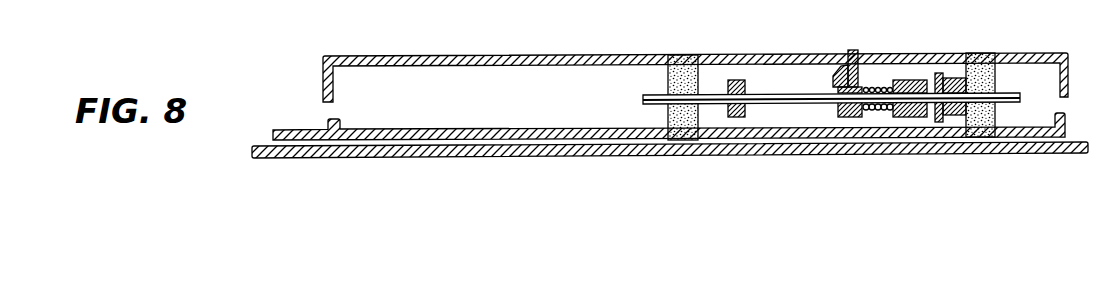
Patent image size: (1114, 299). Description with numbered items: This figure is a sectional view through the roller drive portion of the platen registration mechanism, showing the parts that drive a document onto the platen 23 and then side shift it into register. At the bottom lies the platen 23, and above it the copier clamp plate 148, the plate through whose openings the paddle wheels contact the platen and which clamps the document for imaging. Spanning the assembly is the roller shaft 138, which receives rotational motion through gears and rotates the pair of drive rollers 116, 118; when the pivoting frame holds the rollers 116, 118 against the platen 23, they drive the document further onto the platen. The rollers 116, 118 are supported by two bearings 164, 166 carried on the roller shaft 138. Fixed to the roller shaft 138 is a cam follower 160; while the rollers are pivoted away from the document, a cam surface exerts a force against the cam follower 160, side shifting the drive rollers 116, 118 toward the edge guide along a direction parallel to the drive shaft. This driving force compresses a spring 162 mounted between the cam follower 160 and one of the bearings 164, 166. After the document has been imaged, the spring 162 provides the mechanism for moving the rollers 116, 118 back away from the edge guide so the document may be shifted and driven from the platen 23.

The platen 23 is at (565, 158).
The drive roller 116 is at (985, 52).
The drive roller 118 is at (684, 54).
The roller shaft 138 is at (772, 95).
The copier clamp plate 148 is at (406, 128).
The cam follower 160 is at (850, 50).
The spring 162 is at (882, 87).
The bearing 164 is at (908, 118).
The bearing 166 is at (738, 79).